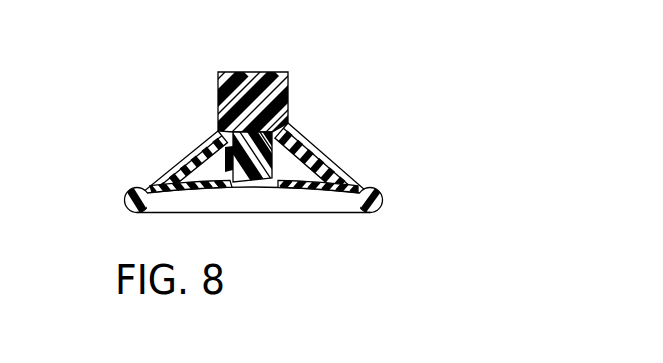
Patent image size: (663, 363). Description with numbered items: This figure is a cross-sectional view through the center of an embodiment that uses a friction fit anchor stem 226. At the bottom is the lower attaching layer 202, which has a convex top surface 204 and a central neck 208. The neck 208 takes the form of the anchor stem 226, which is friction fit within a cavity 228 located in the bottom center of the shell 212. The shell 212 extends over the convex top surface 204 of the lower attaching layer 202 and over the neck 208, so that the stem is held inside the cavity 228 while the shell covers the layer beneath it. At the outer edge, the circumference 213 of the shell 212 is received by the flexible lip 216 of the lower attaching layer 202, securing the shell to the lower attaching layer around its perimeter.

The lower attaching layer 202 is at (284, 188).
The convex top surface 204 is at (178, 172).
The neck 208 is at (273, 72).
The shell 212 is at (314, 165).
The circumference 213 is at (143, 191).
The flexible lip 216 is at (379, 200).
The anchor stem 226 is at (220, 131).
The cavity 228 is at (278, 133).